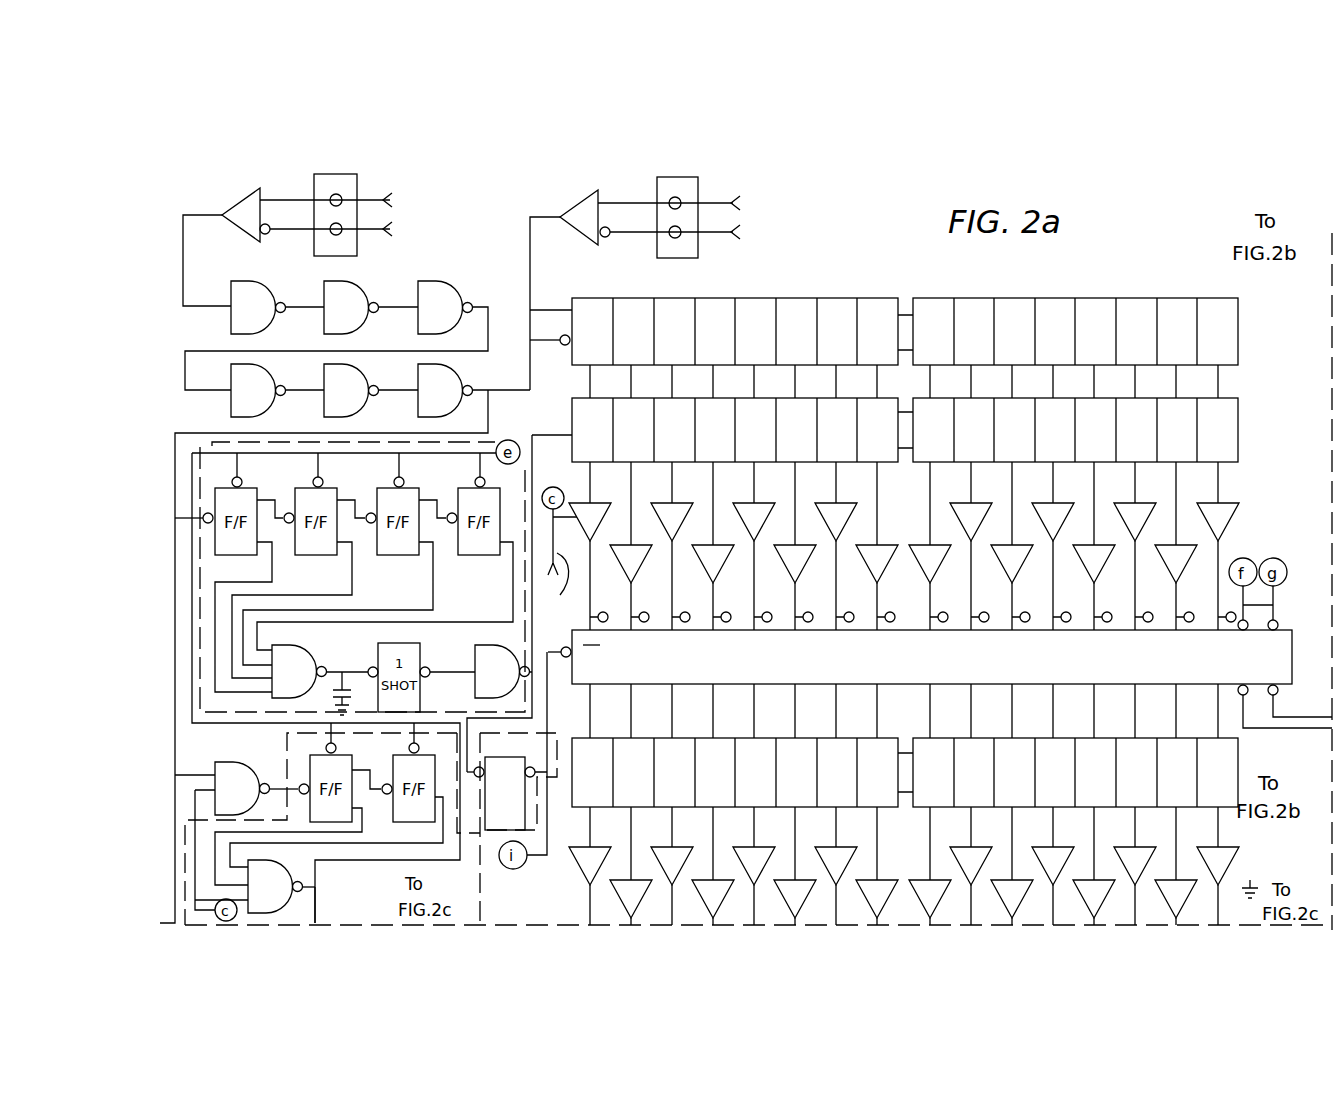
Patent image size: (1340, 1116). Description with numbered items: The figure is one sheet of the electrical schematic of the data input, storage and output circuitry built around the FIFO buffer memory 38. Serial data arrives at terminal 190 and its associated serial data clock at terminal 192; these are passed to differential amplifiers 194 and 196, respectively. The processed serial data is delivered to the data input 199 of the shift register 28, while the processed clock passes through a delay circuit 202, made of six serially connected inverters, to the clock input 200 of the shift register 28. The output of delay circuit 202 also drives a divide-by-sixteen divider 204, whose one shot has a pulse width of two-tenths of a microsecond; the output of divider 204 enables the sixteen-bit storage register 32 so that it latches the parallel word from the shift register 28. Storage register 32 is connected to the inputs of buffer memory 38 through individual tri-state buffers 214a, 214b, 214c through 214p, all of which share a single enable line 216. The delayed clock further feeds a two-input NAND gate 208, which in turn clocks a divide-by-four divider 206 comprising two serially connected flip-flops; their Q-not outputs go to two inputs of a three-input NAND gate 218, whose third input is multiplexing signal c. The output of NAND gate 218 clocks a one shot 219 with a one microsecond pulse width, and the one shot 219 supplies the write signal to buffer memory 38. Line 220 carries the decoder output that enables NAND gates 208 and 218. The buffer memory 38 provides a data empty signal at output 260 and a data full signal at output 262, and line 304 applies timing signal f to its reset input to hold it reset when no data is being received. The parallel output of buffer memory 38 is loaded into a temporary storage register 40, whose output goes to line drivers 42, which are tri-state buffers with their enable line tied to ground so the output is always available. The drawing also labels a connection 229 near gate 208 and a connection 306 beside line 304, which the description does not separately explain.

The differential amplifier 196 is at (236, 206).
The terminal 192 is at (357, 190).
The differential amplifier 194 is at (565, 212).
The terminal 190 is at (720, 180).
The delay circuit 202 is at (466, 280).
The data input 199 is at (560, 310).
The clock input 200 is at (565, 335).
The shift register 28 is at (800, 298).
The storage register 32 is at (809, 447).
The divide by 16 divider 204 is at (212, 446).
The tri-state buffer 214p is at (577, 504).
The tri-state buffer 214c is at (1128, 546).
The tri-state buffer 214a is at (1228, 503).
The tri-state buffer 214b is at (1197, 558).
The line 304 is at (1273, 605).
The FIFO input line 306 is at (1273, 613).
The enable line 216 is at (560, 585).
The buffer memory 38 is at (920, 657).
The output 262 is at (1280, 701).
The output 260 is at (1240, 703).
The control line 229 is at (203, 765).
The NAND gate 208 is at (272, 766).
The one shot 219 is at (522, 748).
The NAND gate 218 is at (315, 873).
The line 220 is at (315, 908).
The divide by four divider 206 is at (483, 893).
The storage register 40 is at (724, 787).
The line drivers 42 is at (562, 877).